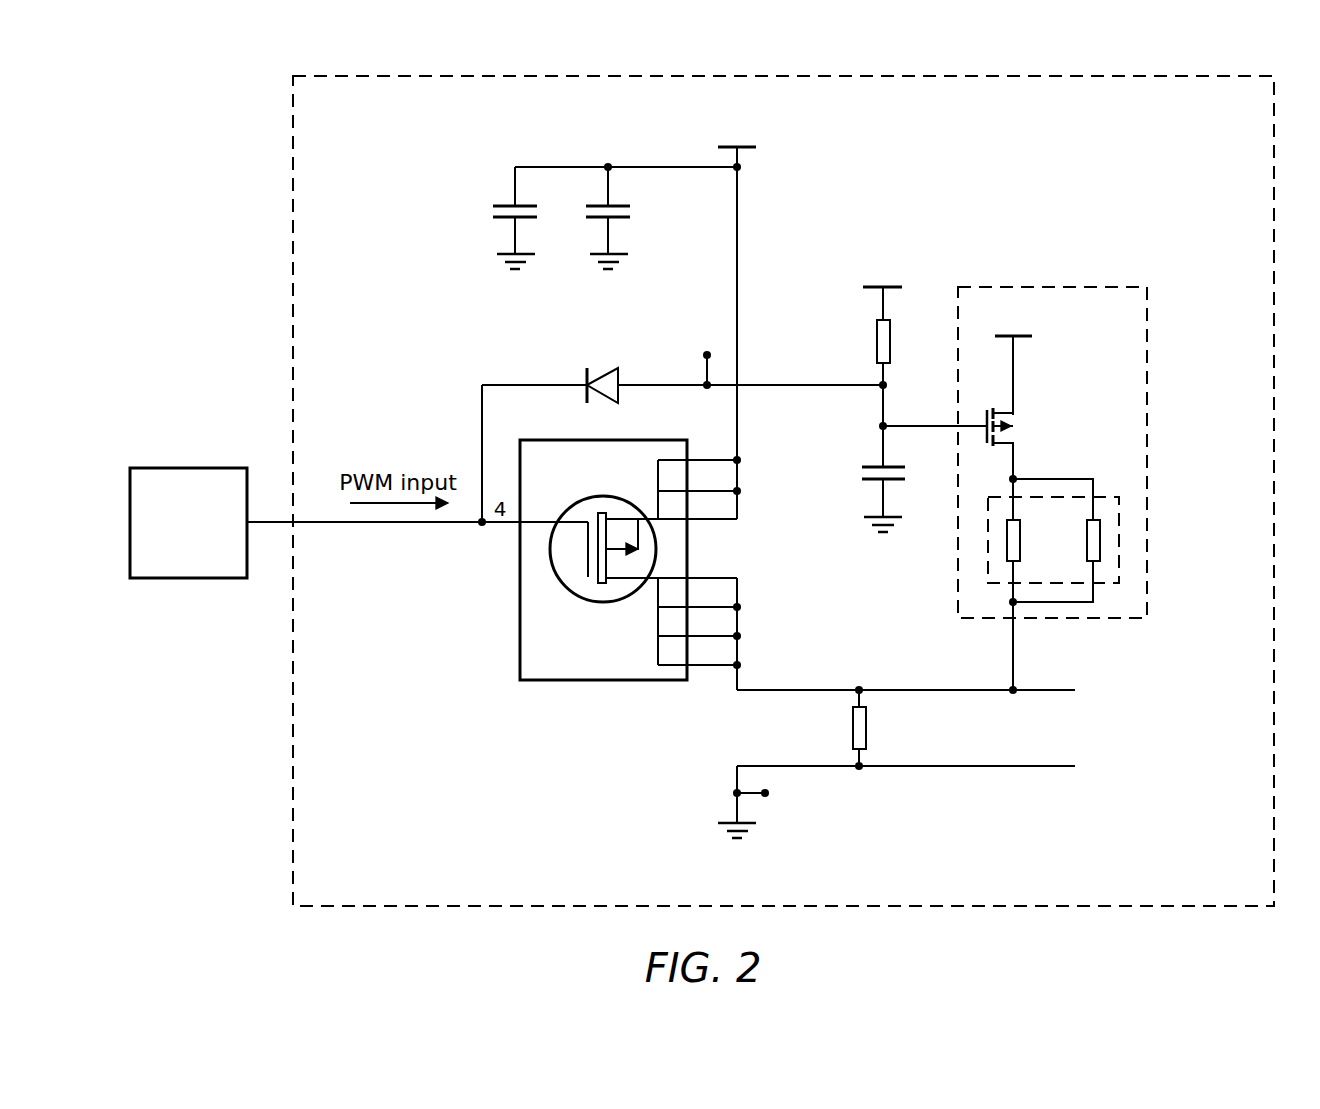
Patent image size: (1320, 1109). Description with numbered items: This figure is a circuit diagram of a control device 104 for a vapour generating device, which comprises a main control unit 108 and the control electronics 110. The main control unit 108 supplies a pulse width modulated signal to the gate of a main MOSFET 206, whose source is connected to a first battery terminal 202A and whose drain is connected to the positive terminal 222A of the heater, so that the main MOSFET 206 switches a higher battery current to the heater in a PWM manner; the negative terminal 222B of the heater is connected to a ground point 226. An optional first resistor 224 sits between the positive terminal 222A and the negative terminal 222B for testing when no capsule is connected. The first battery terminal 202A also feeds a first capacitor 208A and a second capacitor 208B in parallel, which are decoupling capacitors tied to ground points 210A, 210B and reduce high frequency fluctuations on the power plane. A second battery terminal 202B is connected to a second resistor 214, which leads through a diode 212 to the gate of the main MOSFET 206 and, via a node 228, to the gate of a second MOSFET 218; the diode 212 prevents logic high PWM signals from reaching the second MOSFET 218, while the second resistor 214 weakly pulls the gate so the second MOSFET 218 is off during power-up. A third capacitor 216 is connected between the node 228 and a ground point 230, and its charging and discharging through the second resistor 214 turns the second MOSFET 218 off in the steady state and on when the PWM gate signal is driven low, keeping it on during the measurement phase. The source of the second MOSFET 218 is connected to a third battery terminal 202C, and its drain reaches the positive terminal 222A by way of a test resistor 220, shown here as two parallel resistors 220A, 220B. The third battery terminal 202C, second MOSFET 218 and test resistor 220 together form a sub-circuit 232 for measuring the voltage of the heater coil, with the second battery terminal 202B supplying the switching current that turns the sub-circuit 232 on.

The control device 104 is at (214, 106).
The main control unit 108 is at (215, 468).
The control electronics 110 is at (1240, 906).
The first battery terminal 202A is at (785, 128).
The second battery terminal 202B is at (880, 254).
The third battery terminal 202C is at (1012, 300).
The main MOSFET 206 is at (570, 595).
The first capacitor 208A is at (490, 210).
The second capacitor 208B is at (635, 212).
The ground point 210A is at (495, 262).
The ground point 210B is at (625, 263).
The diode 212 is at (602, 370).
The second resistor 214 is at (877, 342).
The third capacitor 216 is at (860, 474).
The second MOSFET 218 is at (1018, 428).
The test resistor 220 is at (1054, 582).
The resistor 220A is at (1007, 548).
The resistor 220B is at (1100, 548).
The positive terminal 222A is at (1158, 690).
The negative terminal 222B is at (1158, 766).
The first resistor 224 is at (853, 728).
The ground point 226 is at (720, 830).
The node 228 is at (877, 426).
The ground point 230 is at (860, 523).
The sub-circuit 232 is at (1124, 284).